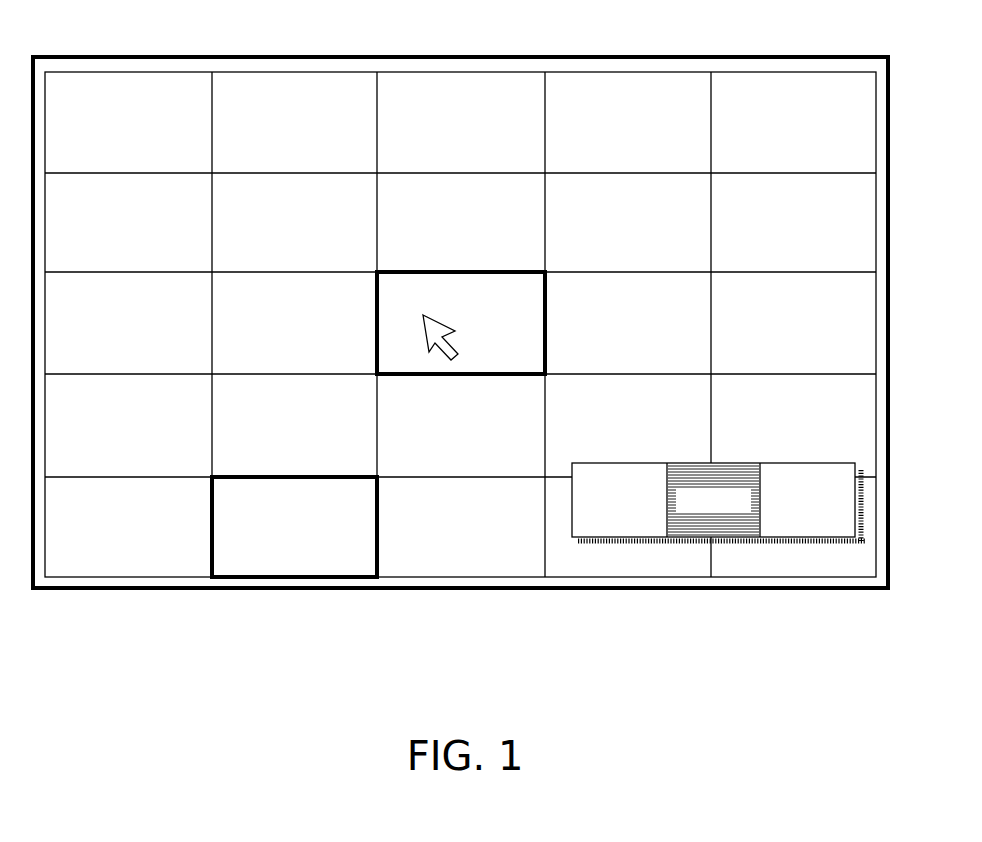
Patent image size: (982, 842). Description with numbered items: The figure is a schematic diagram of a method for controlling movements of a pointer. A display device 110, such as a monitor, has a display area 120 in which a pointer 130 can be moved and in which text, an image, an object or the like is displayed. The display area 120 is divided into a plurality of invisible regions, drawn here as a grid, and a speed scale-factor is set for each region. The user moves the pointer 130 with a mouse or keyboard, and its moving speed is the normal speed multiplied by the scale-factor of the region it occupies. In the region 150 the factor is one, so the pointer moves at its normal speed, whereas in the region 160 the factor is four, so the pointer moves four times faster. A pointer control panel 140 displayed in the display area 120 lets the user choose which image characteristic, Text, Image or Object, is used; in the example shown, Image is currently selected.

The display device 110 is at (381, 57).
The display area 120 is at (752, 72).
The pointer 130 is at (423, 315).
The pointer control panel 140 is at (790, 538).
The region 150 is at (447, 375).
The region 160 is at (268, 578).